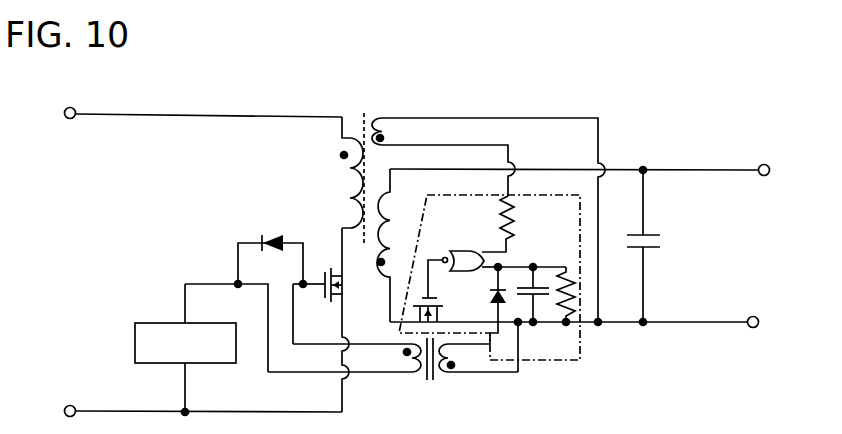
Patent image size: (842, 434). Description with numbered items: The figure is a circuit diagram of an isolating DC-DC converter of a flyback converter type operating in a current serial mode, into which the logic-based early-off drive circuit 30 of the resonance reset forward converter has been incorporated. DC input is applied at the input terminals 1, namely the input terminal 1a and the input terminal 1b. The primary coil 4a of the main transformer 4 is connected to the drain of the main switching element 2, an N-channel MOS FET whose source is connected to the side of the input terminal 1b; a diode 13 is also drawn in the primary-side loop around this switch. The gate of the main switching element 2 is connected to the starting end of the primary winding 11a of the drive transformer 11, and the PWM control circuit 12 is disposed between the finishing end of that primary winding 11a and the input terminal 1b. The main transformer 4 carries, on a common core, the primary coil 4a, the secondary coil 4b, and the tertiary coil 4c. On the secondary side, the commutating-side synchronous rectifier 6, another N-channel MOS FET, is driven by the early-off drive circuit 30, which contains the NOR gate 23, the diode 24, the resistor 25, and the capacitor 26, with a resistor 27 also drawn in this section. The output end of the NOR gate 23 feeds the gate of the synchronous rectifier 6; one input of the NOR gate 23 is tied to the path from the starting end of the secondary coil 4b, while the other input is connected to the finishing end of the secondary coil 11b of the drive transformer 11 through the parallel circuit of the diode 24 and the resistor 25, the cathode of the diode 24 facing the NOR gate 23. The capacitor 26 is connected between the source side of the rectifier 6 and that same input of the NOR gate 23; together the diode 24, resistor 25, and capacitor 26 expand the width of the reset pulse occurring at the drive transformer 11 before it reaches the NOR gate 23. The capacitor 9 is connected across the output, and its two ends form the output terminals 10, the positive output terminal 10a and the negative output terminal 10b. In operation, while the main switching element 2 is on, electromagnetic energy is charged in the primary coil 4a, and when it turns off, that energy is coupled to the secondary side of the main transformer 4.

The input terminals 1 is at (199, 262).
The input terminal 1a is at (199, 129).
The input terminal 1b is at (199, 397).
The main switching element 2 is at (326, 285).
The main transformer 4 is at (374, 204).
The primary coil 4a is at (342, 183).
The secondary coil 4b is at (390, 245).
The tertiary coil 4c is at (377, 117).
The commutating-side synchronous rectifier 6 is at (425, 298).
The capacitor 9 is at (644, 246).
The output terminals 10 is at (772, 251).
The (+) side output terminal 10a is at (772, 158).
The (−) side output terminal 10b is at (771, 340).
The drive transformer 11 is at (393, 371).
The primary winding 11a is at (344, 358).
The secondary coil 11b is at (478, 358).
The PWM control circuit 12 is at (150, 323).
The diode 13 is at (270, 249).
The NOR gate 23 is at (463, 262).
The diode 24 is at (483, 294).
The resistor 25 is at (563, 285).
The capacitor 26 is at (537, 304).
The resistor 27 is at (512, 224).
The early-off drive circuit 30 is at (583, 356).